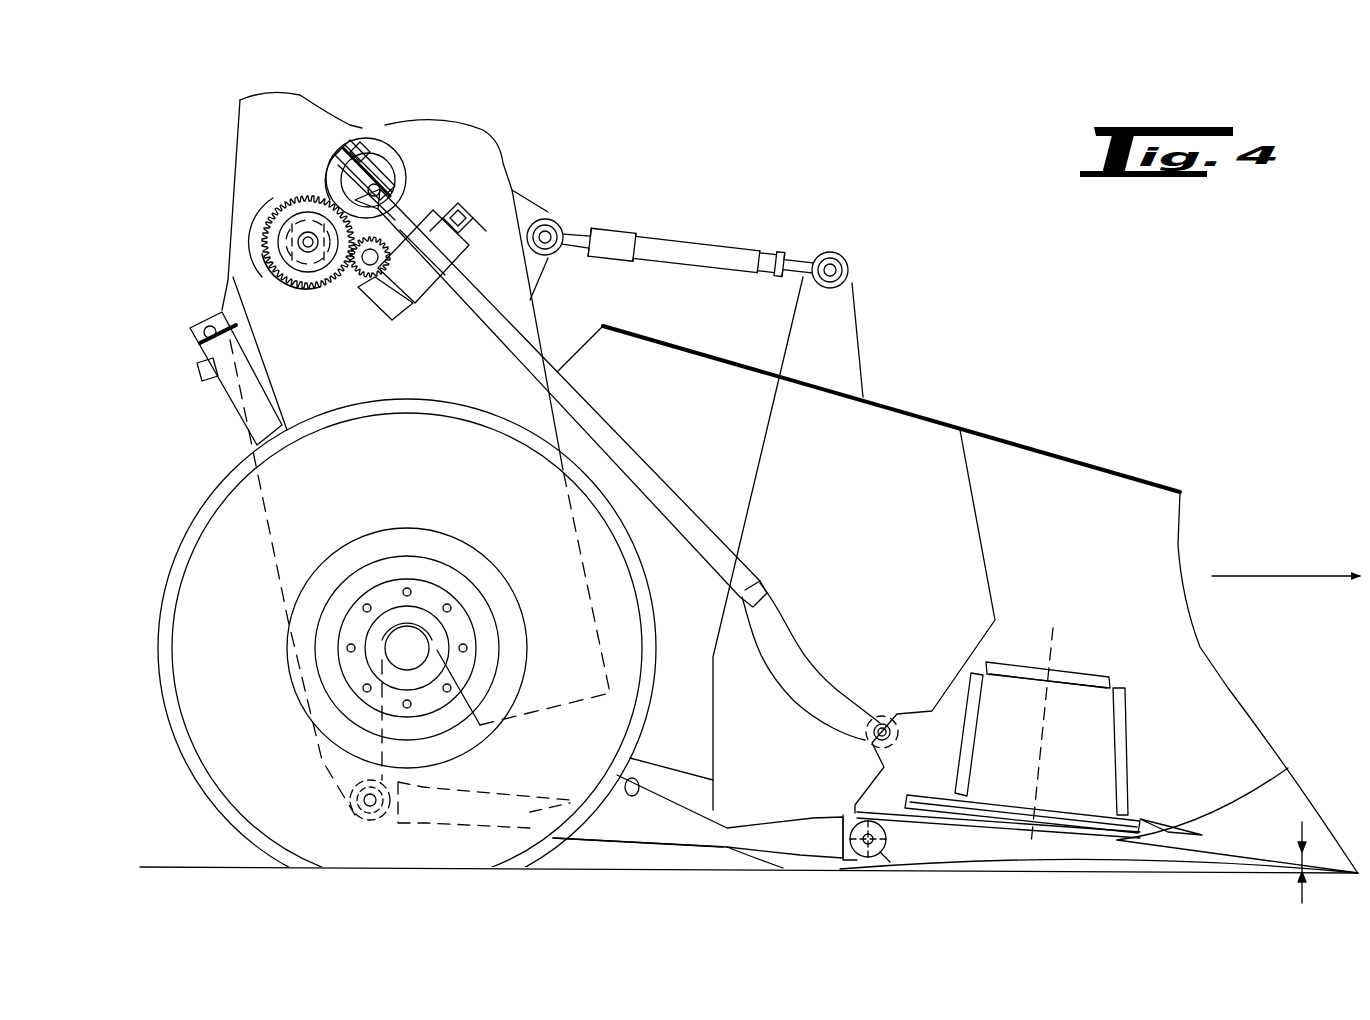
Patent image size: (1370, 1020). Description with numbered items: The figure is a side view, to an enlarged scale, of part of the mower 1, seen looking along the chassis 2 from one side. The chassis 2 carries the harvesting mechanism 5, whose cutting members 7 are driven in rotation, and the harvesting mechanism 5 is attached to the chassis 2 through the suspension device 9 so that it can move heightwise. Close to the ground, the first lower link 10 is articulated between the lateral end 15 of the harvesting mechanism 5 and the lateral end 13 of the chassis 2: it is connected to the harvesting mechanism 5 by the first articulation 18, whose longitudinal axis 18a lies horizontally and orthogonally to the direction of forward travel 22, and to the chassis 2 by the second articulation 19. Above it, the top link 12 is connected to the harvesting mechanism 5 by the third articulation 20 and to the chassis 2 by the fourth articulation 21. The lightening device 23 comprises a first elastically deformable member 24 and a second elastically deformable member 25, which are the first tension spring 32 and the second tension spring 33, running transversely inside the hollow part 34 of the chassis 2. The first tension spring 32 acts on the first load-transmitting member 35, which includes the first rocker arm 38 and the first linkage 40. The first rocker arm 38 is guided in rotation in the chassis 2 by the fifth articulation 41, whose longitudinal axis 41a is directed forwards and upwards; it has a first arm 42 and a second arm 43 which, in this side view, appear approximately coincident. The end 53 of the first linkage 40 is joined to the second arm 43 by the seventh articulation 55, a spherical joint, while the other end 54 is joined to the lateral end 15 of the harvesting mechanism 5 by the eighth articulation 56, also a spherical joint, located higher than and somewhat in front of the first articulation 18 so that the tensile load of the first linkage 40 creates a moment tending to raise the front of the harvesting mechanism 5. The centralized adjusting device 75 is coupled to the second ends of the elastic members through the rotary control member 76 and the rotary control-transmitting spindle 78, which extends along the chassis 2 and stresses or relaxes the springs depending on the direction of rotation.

The mower 1 is at (1098, 464).
The chassis 2 is at (235, 276).
The harvesting mechanism 5 is at (1132, 726).
The cutting members 7 is at (1115, 692).
The suspension device 9 is at (618, 844).
The first lower link 10 is at (670, 835).
The top link 12 is at (697, 250).
The lateral end of the chassis 13 is at (238, 405).
The lateral end of the harvesting mechanism 15 is at (1146, 858).
The first articulation 18 is at (883, 850).
The longitudinal axis 18a is at (864, 844).
The second articulation 19 is at (372, 812).
The third articulation 20 is at (830, 270).
The fourth articulation 21 is at (547, 237).
The direction of forward travel 22 is at (1277, 576).
The lightening device 23 is at (402, 157).
The first elastically deformable member 24 is at (415, 172).
The second elastically deformable member 25 is at (270, 240).
The first tension spring 32 is at (272, 227).
The second tension spring 33 is at (400, 190).
The hollow part 34 is at (323, 153).
The first load-transmitting member 35 is at (440, 290).
The first rocker arm 38 is at (417, 290).
The first linkage 40 is at (630, 460).
The fifth articulation 41 is at (382, 305).
The longitudinal axis 41a is at (468, 212).
The first arm 42 is at (468, 200).
The second arm 43 is at (365, 176).
The end of the first linkage 53 is at (386, 160).
The other end of the first linkage 54 is at (849, 688).
The seventh articulation 55 is at (360, 176).
The eighth articulation 56 is at (880, 716).
The centralized adjusting device 75 is at (292, 292).
The rotary control member 76 is at (364, 285).
The rotary control-transmitting spindle 78 is at (376, 264).